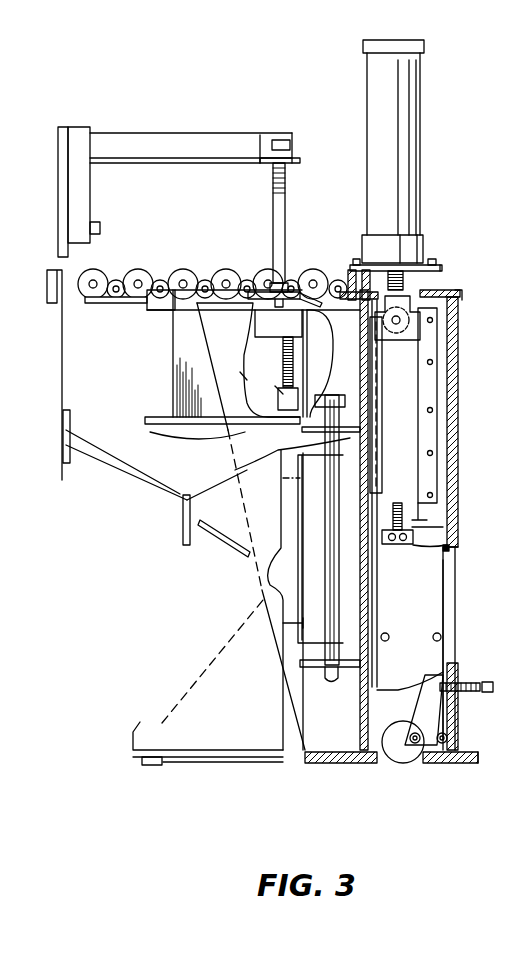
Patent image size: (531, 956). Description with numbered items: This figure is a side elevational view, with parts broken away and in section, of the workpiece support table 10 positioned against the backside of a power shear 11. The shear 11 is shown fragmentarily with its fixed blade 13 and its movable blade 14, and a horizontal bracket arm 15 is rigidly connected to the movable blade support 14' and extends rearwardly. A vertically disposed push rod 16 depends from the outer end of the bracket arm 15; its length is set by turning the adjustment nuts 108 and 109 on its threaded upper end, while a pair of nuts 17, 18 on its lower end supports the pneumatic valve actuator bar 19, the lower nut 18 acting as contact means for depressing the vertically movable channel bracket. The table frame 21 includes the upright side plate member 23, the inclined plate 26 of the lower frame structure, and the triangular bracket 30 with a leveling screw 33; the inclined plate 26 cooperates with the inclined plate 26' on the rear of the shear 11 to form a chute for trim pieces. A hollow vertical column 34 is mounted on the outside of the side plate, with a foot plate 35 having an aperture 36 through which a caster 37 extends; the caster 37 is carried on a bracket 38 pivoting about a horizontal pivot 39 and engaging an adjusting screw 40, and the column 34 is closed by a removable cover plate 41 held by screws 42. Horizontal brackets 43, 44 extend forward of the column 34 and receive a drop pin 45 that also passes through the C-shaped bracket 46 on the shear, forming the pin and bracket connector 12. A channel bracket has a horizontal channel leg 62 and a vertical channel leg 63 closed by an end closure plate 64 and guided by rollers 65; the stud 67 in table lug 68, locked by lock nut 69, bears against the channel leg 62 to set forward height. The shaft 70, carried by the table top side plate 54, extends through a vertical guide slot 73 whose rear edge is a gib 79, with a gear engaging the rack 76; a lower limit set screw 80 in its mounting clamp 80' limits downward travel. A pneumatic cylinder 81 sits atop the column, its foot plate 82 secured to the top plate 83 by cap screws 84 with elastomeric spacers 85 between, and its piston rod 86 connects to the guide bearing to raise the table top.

The workpiece support table 10 is at (432, 180).
The power shear 11 is at (108, 250).
The pin and bracket connectors 12 is at (358, 607).
The fixed blade 13 is at (63, 293).
The movable blade 14 is at (53, 192).
The movable blade support 14' is at (110, 185).
The horizontal bracket arm 15 is at (168, 142).
The push rod 16 is at (286, 222).
The upper nut 17 is at (280, 291).
The lower nut 18 is at (232, 306).
The pneumatic valve actuator bar 19 is at (294, 298).
The frame 21 is at (175, 661).
The side plate member 23 is at (183, 498).
The inclined plate 26 is at (223, 549).
The inclined plate 26' is at (125, 455).
The triangular bracket 30 is at (162, 723).
The leveling screw 33 is at (146, 762).
The hollow vertical column 34 is at (457, 465).
The foot plate 35 is at (479, 760).
The aperture 36 is at (388, 764).
The caster 37 is at (413, 762).
The bracket 38 is at (427, 708).
The horizontal pivot 39 is at (452, 736).
The adjusting screw 40 is at (500, 687).
The cover plate 41 is at (423, 621).
The screws 42 is at (441, 637).
The horizontal bracket 43 is at (310, 670).
The horizontal bracket 44 is at (240, 429).
The drop pin 45 is at (275, 449).
The C-shaped bracket 46 is at (277, 585).
The side plate of table top frame 54 is at (173, 341).
The horizontal channel leg 62 is at (290, 335).
The vertical channel leg 63 is at (308, 330).
The end closure plate 64 is at (283, 350).
The roller 65 is at (300, 390).
The stud 67 is at (245, 372).
The table lug 68 is at (278, 386).
The lock nut 69 is at (192, 430).
The shaft 70 is at (420, 322).
The vertical guide slot 73 is at (413, 520).
The rack 76 is at (383, 420).
The gib 79 is at (433, 448).
The lower limit set screw 80 is at (442, 541).
The mounting clamp 80' is at (461, 565).
The pneumatic cylinder 81 is at (423, 100).
The foot plate 82 is at (443, 268).
The top plate 83 is at (462, 296).
The cap screws 84 is at (360, 262).
The elastomeric spacers 85 is at (349, 287).
The piston rod 86 is at (456, 287).
The adjustment nut 108 is at (292, 165).
The adjustment nut 109 is at (293, 145).